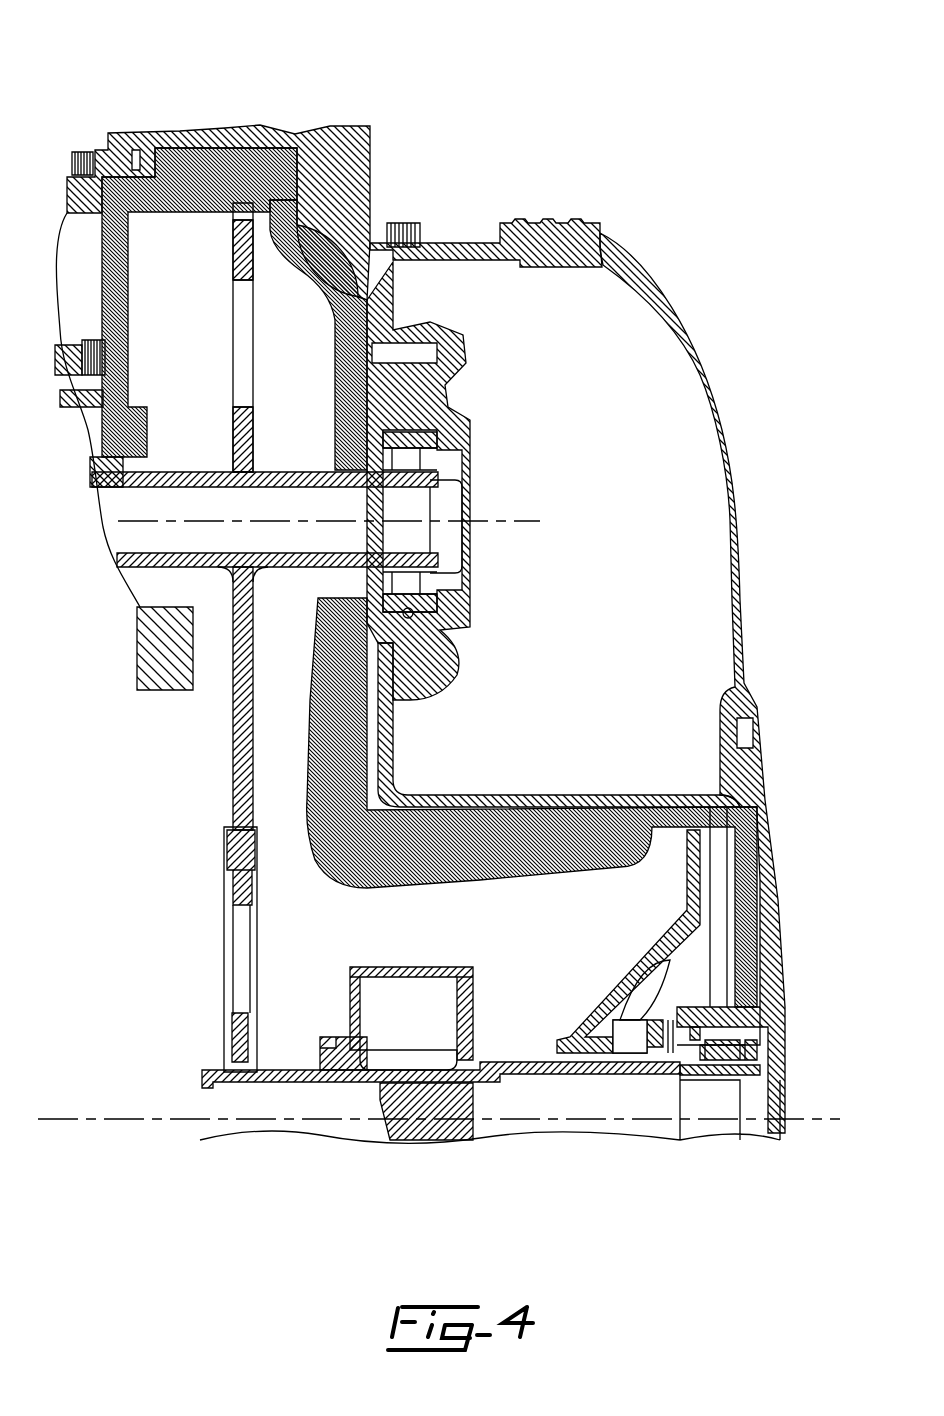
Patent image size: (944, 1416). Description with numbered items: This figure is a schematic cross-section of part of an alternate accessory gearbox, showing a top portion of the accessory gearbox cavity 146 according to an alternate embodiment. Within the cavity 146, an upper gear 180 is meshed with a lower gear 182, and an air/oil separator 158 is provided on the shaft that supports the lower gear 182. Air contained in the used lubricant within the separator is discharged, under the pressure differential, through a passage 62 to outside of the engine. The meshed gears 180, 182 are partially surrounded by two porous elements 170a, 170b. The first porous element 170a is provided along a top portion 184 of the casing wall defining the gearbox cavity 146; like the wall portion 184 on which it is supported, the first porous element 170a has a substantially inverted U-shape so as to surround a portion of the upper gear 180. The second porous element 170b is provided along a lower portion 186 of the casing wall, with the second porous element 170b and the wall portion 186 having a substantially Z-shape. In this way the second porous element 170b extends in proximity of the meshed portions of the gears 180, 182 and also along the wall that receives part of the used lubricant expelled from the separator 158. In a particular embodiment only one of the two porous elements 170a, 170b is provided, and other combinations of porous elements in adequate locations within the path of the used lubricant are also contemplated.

The passage 62 is at (138, 1122).
The accessory gearbox cavity 146 is at (183, 247).
The air/oil separator 158 is at (427, 1010).
The first porous element 170a is at (358, 257).
The second porous element 170b is at (747, 810).
The upper gear 180 is at (237, 750).
The lower gear 182 is at (242, 880).
The top portion of the casing wall 184 is at (332, 133).
The lower portion of the casing wall 186 is at (670, 797).